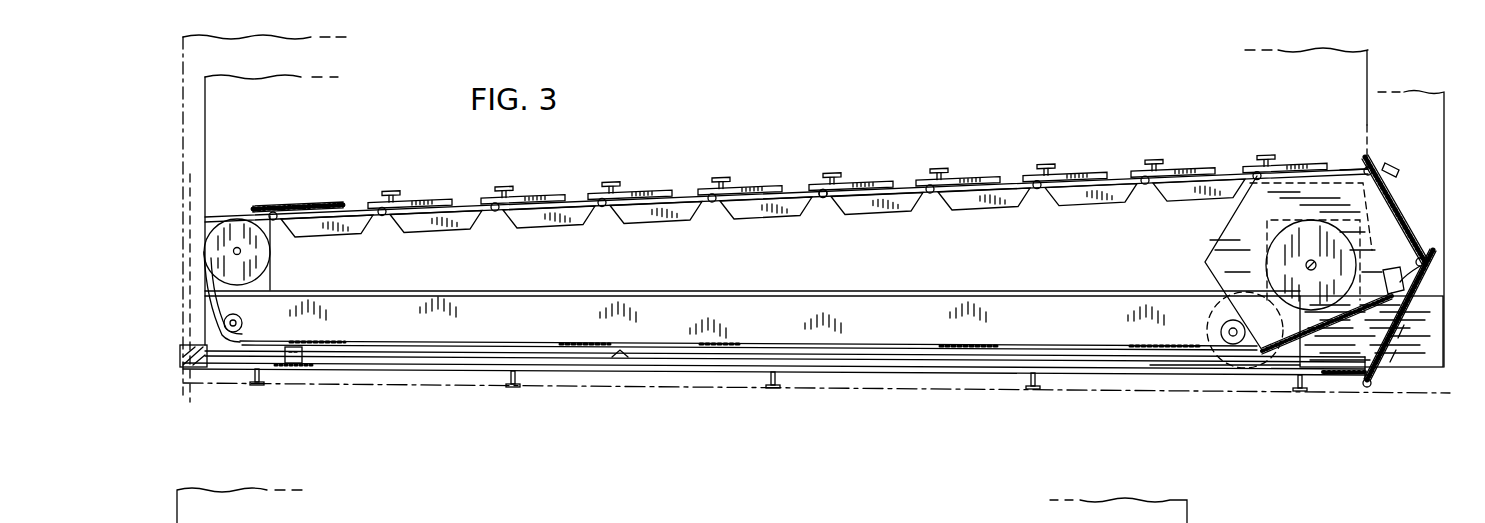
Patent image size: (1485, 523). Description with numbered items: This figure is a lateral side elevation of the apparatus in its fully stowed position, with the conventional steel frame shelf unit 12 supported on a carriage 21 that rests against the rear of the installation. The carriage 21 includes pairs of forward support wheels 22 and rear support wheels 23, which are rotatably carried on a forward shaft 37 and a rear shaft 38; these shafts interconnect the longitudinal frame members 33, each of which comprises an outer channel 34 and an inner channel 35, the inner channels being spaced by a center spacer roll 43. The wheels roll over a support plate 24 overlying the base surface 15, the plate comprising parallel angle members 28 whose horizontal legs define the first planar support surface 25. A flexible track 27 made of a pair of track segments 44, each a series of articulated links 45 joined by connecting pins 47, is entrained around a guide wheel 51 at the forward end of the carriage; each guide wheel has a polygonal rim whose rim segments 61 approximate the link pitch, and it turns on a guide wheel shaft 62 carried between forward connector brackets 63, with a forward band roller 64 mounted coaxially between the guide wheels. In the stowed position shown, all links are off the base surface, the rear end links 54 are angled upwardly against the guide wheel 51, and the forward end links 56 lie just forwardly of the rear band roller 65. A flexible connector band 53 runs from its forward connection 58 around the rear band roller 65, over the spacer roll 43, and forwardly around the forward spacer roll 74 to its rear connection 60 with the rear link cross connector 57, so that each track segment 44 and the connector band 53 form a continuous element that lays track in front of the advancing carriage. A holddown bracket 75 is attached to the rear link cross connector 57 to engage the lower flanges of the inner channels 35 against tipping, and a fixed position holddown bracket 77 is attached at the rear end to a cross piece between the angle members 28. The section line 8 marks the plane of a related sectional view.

The section line 8 is at (220, 402).
The steel frame shelf unit 12 is at (210, 147).
The base surface 15 is at (705, 385).
The carriage 21 is at (923, 218).
The forward support wheels 22 is at (1236, 373).
The rear support wheels 23 is at (265, 312).
The support plate 24 is at (467, 387).
The first planar support surface 25 is at (630, 362).
The flexible track 27 is at (786, 176).
The angle members 28 is at (373, 364).
The longitudinal frame members 33 is at (1027, 286).
The outer channel 34 is at (923, 313).
The inner channel 35 is at (1430, 327).
The forward shaft 37 is at (1227, 322).
The rear shaft 38 is at (240, 318).
The center spacer roll 43 is at (245, 326).
The track segments 44 is at (678, 186).
The articulated links 45 is at (900, 187).
The connecting pin 47 is at (821, 198).
The guide wheel 51 is at (1288, 194).
The flexible connector band 53 is at (480, 337).
The rear end links 54 is at (1423, 272).
The forward end links 56 is at (322, 205).
The rear link cross connector 57 is at (1400, 297).
The forward connection 58 is at (278, 213).
The rear connection 60 is at (1367, 402).
The rim segment 61 is at (1347, 168).
The guide wheel shaft 62 is at (1307, 260).
The forward connector brackets 63 is at (1262, 222).
The forward band roller 64 is at (1398, 204).
The rear band roller 65 is at (253, 212).
The forward spacer roll 74 is at (1160, 325).
The holddown bracket 75 is at (1423, 260).
The fixed position holddown bracket 77 is at (297, 365).